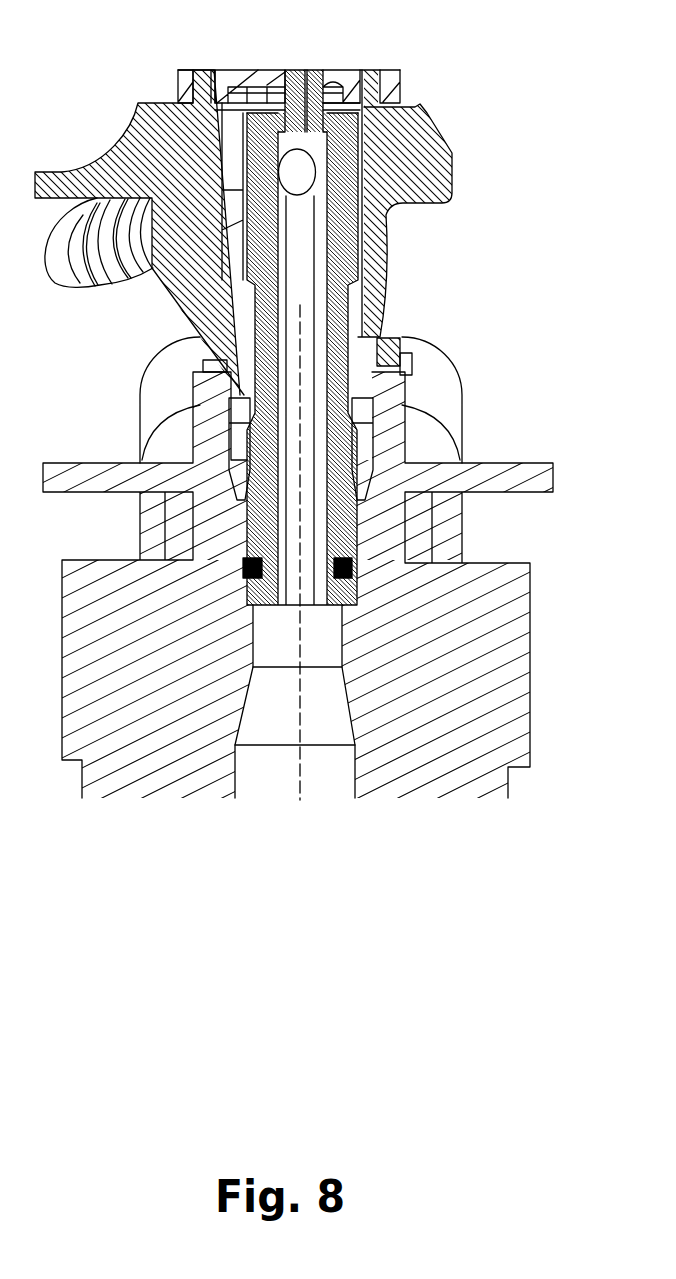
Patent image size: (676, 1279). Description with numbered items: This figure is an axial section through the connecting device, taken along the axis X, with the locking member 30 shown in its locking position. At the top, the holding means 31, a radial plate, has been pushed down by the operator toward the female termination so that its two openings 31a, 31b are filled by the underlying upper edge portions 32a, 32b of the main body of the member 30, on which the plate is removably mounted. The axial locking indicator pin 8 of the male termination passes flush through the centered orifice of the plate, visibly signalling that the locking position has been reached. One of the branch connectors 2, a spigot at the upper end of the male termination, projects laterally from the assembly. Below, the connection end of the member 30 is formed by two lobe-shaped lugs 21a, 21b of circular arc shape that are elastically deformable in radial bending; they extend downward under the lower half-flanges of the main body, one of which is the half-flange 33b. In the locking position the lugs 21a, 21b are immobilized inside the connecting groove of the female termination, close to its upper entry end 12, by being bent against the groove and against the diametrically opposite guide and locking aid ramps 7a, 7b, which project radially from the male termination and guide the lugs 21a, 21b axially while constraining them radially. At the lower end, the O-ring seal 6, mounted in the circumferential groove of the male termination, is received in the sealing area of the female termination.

The branch connector 2 is at (80, 289).
The locking member 30 is at (168, 307).
The holding means 31 is at (245, 70).
The opening 31a is at (195, 68).
The upper edge portion 32a is at (212, 68).
The axial locking indicator pin 8 is at (315, 72).
The upper edge portion 32b is at (370, 70).
The opening 31b is at (382, 70).
The lower half-flange 33b is at (392, 352).
The entry end 12 is at (413, 368).
The connecting lug 21a is at (237, 412).
The connecting lug 21b is at (368, 418).
The ramp 7a is at (240, 440).
The ramp 7b is at (362, 440).
The O-ring seal 6 is at (268, 606).
The axis X is at (297, 785).